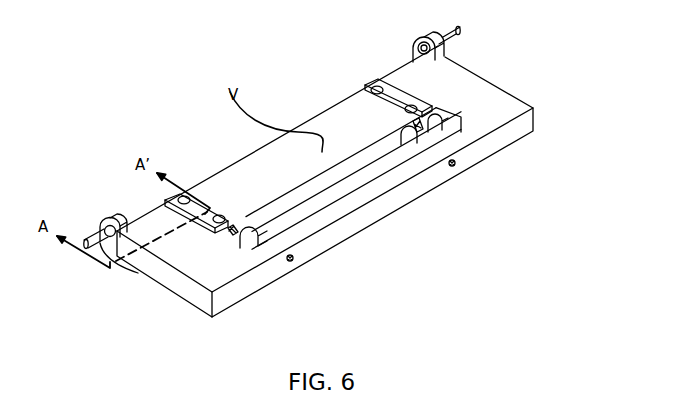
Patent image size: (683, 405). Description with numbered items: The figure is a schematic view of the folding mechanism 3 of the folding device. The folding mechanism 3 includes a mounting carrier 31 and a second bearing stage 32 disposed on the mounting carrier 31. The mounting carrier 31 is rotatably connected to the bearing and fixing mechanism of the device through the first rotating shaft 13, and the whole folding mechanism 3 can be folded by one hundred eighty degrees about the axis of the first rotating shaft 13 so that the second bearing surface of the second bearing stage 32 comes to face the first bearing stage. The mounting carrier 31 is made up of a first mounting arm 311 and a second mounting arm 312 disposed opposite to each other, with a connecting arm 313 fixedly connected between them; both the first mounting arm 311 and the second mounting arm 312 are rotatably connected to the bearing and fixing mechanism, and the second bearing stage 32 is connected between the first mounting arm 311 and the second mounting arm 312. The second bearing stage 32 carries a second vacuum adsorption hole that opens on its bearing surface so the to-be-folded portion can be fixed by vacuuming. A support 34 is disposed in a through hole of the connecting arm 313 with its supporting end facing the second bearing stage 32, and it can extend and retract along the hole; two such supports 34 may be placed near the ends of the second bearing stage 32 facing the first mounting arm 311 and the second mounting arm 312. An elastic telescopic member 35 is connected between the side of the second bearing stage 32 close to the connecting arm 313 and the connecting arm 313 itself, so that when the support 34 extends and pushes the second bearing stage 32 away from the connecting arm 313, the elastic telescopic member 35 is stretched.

The folding mechanism 3 is at (59, 38).
The first rotating shaft 13 is at (102, 224).
The mounting carrier 31 is at (592, 135).
The first mounting arm 311 is at (467, 107).
The second mounting arm 312 is at (198, 260).
The connecting arm 313 is at (367, 193).
The second bearing stage 32 is at (273, 158).
The support 34 is at (413, 133).
The elastic telescopic member 35 is at (433, 128).